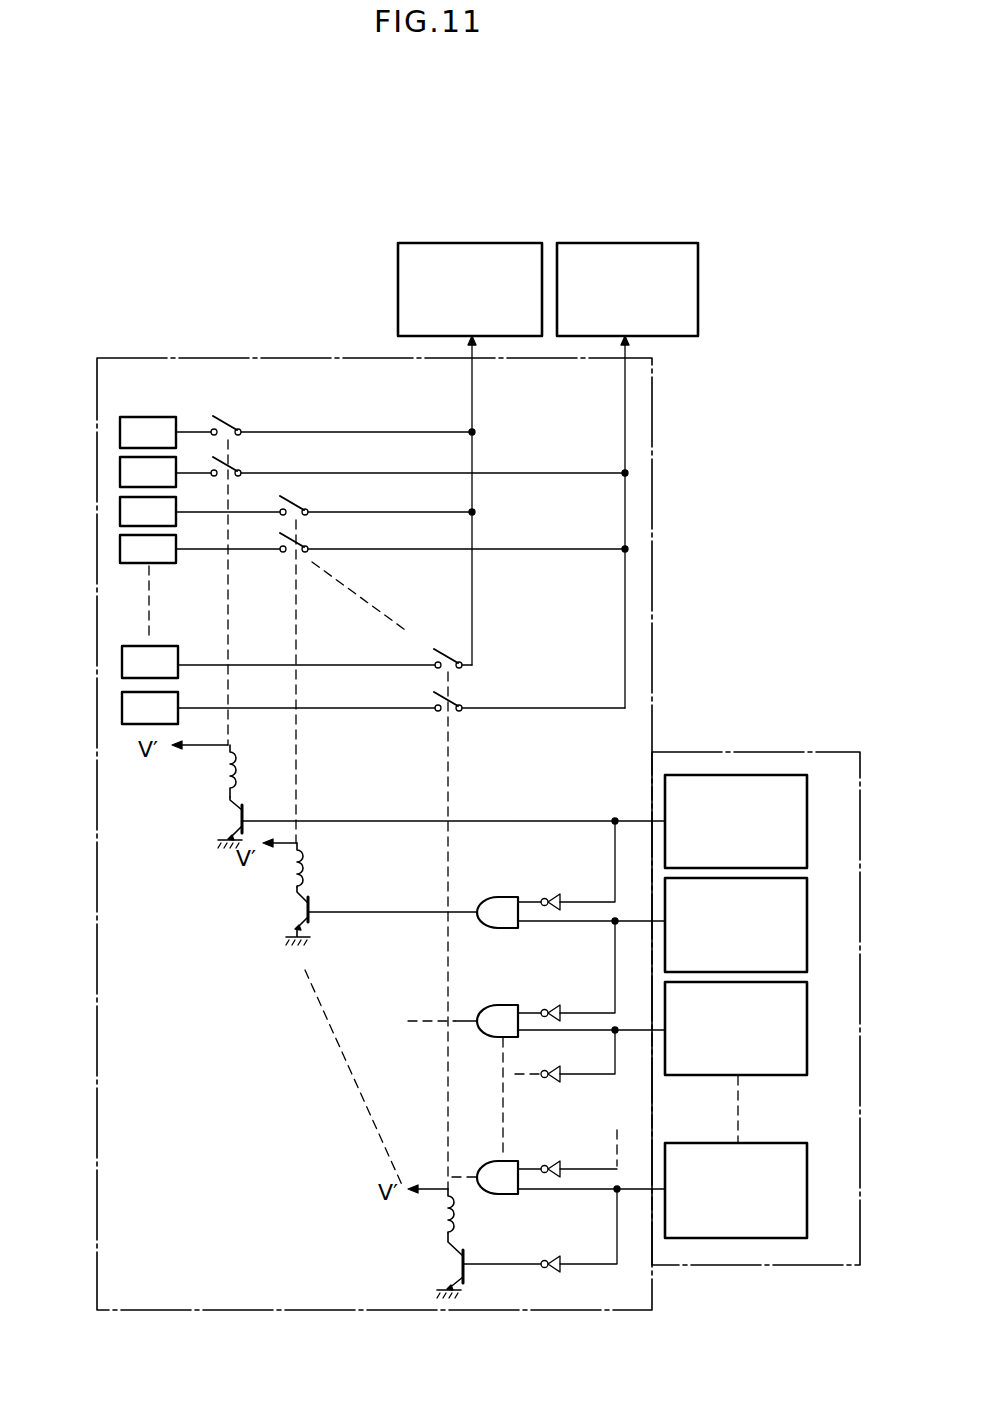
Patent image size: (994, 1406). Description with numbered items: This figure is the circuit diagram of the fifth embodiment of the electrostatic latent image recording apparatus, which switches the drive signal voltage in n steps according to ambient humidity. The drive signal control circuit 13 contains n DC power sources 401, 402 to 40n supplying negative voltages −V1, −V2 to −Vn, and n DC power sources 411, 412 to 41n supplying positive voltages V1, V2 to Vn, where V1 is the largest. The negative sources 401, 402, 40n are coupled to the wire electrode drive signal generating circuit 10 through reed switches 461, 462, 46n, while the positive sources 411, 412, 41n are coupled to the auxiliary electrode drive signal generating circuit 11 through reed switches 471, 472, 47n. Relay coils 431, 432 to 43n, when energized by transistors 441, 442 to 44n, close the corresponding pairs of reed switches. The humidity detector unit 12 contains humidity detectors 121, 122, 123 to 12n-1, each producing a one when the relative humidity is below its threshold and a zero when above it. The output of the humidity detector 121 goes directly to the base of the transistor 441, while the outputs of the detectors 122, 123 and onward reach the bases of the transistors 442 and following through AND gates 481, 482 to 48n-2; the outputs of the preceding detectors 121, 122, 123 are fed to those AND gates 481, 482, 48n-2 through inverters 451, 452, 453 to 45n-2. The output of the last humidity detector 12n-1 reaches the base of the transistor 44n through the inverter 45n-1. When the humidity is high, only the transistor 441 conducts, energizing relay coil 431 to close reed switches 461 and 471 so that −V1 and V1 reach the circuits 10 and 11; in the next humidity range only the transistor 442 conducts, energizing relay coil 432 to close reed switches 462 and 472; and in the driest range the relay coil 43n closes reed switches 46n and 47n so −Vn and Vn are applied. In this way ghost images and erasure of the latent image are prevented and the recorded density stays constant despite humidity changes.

The drive signal generating circuit 10 is at (495, 243).
The drive signal generating circuit 11 is at (662, 243).
The humidity detector unit 12 is at (754, 752).
The drive signal control circuit 13 is at (649, 450).
The DC power source 401 is at (186, 410).
The DC power source 411 is at (186, 466).
The DC power source 402 is at (186, 506).
The DC power source 412 is at (186, 544).
The DC power source 40n is at (188, 655).
The DC power source 41n is at (188, 702).
The reed switch 461 is at (232, 424).
The reed switch 471 is at (232, 465).
The reed switch 462 is at (300, 504).
The reed switch 472 is at (312, 529).
The reed switch 46n is at (446, 650).
The reed switch 47n is at (454, 700).
The relay coil 431 is at (236, 770).
The relay coil 432 is at (303, 875).
The relay coil 43n is at (454, 1213).
The transistor 441 is at (244, 812).
The transistor 442 is at (310, 906).
The transistor 44n is at (478, 1246).
The AND gate 481 is at (500, 897).
The AND gate 482 is at (500, 1005).
The AND gate 48n-2 is at (510, 1161).
The inverter 451 is at (556, 893).
The inverter 452 is at (556, 1004).
The inverter 453 is at (566, 1053).
The inverter 45n-2 is at (562, 1162).
The inverter 45n-1 is at (552, 1255).
The humidity detector 121 is at (807, 815).
The humidity detector 122 is at (807, 920).
The humidity detector 123 is at (807, 1022).
The humidity detector 12n-1 is at (785, 1143).